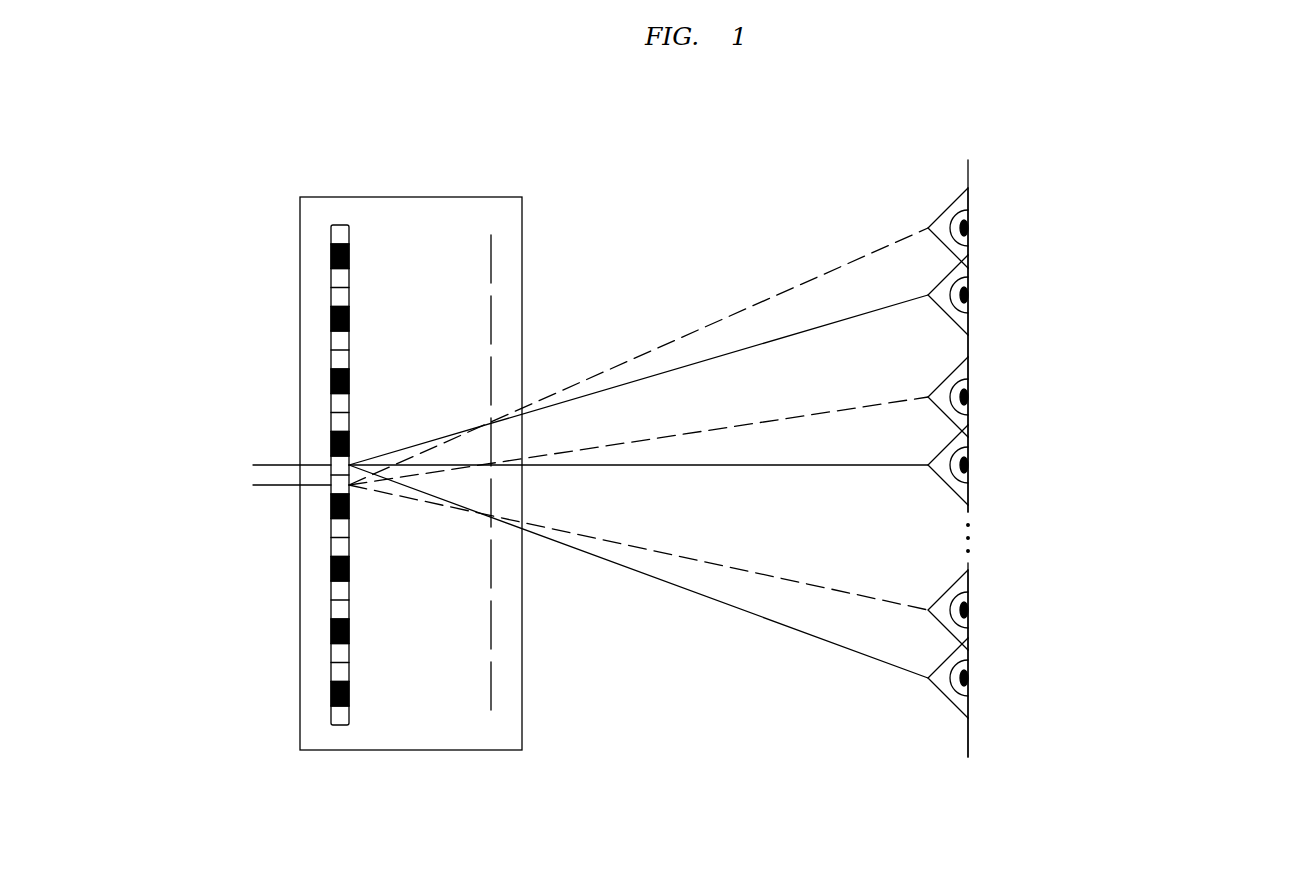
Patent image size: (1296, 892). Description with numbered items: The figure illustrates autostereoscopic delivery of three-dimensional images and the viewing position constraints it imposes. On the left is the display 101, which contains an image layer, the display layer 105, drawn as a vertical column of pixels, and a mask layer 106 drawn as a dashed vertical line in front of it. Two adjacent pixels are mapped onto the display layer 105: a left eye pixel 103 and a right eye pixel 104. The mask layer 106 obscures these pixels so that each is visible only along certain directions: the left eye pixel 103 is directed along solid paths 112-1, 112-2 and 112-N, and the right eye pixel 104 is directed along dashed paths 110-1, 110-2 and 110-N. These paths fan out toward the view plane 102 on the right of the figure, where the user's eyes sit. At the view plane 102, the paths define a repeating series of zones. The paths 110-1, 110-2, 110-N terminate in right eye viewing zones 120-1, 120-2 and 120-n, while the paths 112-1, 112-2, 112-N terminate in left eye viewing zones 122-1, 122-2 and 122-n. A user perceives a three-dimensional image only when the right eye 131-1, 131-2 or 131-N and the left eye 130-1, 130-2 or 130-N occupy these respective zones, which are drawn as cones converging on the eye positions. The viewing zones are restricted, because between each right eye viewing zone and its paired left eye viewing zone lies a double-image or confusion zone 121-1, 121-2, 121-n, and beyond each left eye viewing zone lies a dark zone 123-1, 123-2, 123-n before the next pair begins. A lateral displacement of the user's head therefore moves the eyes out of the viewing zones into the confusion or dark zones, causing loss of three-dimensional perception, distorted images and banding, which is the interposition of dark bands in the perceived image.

The display 101 is at (405, 197).
The view plane 102 is at (968, 158).
The left eye pixel 103 is at (273, 465).
The right eye pixel 104 is at (273, 486).
The display layer 105 is at (340, 725).
The mask layer 106 is at (490, 722).
The path 110-1 is at (780, 293).
The path 110-2 is at (685, 435).
The path 110-N is at (722, 565).
The path 112-1 is at (740, 355).
The path 112-2 is at (640, 467).
The path 112-N is at (716, 600).
The right eye viewing zone 120-1 is at (971, 223).
The confusion zone 121-1 is at (971, 260).
The left eye viewing zone 122-1 is at (971, 298).
The dark zone 123-1 is at (971, 343).
The right eye viewing zone 120-2 is at (971, 392).
The confusion zone 121-2 is at (971, 428).
The left eye viewing zone 122-2 is at (971, 467).
The dark zone 123-2 is at (971, 507).
The right eye viewing zone 120-n is at (971, 603).
The confusion zone 121-n is at (971, 642).
The left eye viewing zone 122-n is at (971, 680).
The dark zone 123-n is at (971, 727).
The left eye 130-1 is at (957, 328).
The right eye 131-1 is at (950, 255).
The left eye 130-2 is at (957, 498).
The right eye 131-2 is at (950, 423).
The left eye 130-N is at (955, 713).
The right eye 131-N is at (940, 625).